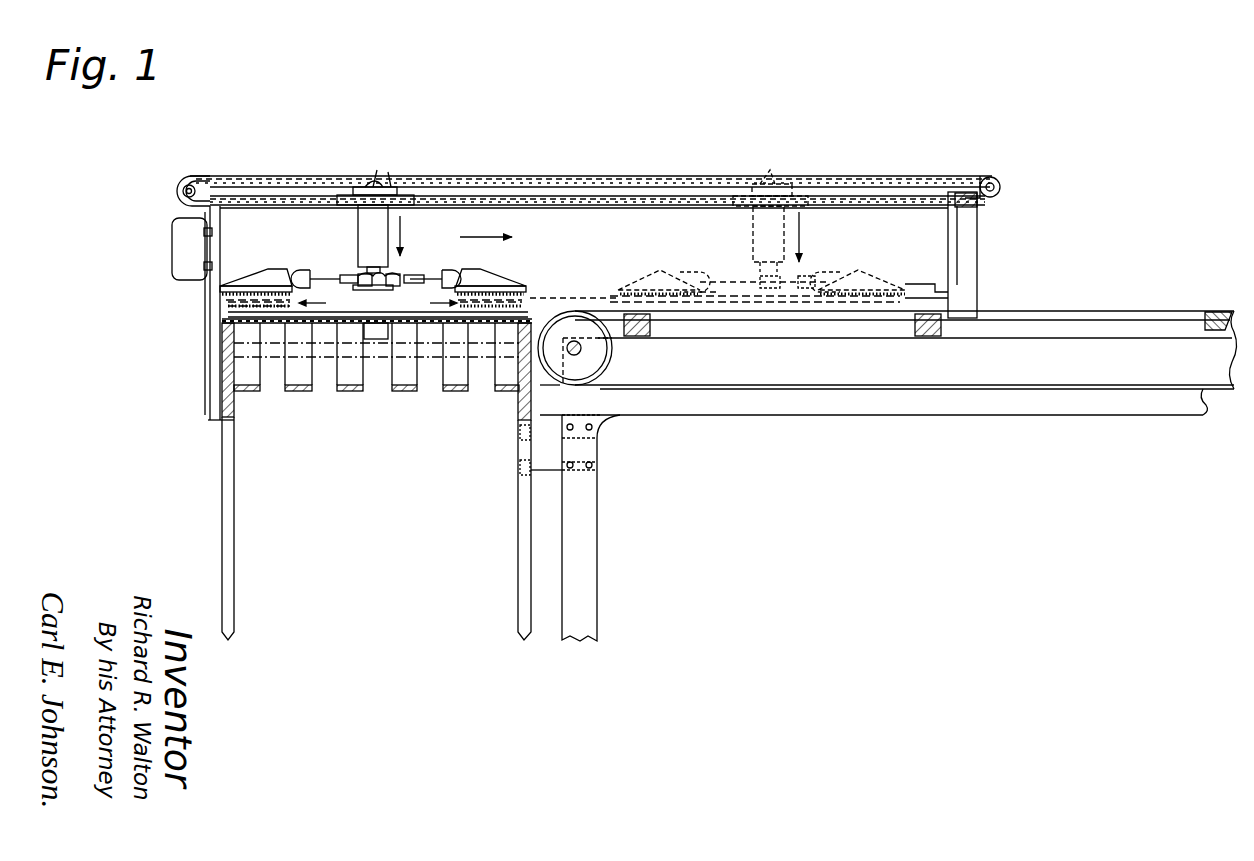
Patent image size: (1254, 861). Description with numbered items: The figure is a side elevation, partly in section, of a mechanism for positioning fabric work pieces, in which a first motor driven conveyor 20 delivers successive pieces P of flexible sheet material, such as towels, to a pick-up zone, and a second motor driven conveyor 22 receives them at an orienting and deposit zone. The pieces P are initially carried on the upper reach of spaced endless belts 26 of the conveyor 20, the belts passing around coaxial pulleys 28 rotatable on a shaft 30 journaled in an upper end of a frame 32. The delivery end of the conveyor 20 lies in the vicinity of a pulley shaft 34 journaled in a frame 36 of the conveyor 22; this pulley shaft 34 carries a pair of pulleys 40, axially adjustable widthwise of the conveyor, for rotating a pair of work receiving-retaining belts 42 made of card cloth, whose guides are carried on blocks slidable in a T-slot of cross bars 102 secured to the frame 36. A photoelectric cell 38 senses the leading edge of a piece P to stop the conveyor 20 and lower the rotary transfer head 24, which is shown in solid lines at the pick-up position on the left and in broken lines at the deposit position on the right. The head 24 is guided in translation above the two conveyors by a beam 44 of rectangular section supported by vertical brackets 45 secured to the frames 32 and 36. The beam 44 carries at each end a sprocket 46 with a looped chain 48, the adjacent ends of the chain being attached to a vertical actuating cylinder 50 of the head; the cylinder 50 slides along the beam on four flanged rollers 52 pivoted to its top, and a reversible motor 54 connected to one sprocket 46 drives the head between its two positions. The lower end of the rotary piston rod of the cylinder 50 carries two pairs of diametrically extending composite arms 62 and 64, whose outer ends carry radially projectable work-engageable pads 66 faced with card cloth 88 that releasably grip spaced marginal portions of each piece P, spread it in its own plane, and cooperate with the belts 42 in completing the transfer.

The first motor driven conveyor 20 is at (203, 382).
The second motor driven conveyor 22 is at (1102, 300).
The rotary transfer head 24 is at (430, 239).
The endless belts 26 is at (262, 387).
The pulleys 28 is at (330, 386).
The shaft 30 is at (428, 366).
The frame 32 is at (220, 462).
The pulley shaft 34 is at (582, 350).
The frame 36 is at (598, 510).
The photoelectric cell 38 is at (377, 339).
The pulleys 40 is at (602, 372).
The work receiving-retaining belts 42 is at (1052, 322).
The beam 44 is at (542, 187).
The vertical brackets 45 is at (210, 316).
The sprocket 46 is at (1000, 182).
The looped chain 48 is at (246, 178).
The vertical actuating cylinder 50 is at (360, 238).
The flanged rollers 52 is at (378, 184).
The reversible motor 54 is at (172, 244).
The composite arms 62 is at (312, 270).
The composite arms 64 is at (462, 266).
The work-engageable pads 66 is at (245, 280).
The card cloth 88 is at (312, 292).
The cross bars 102 is at (652, 327).
The piece P is at (370, 312).